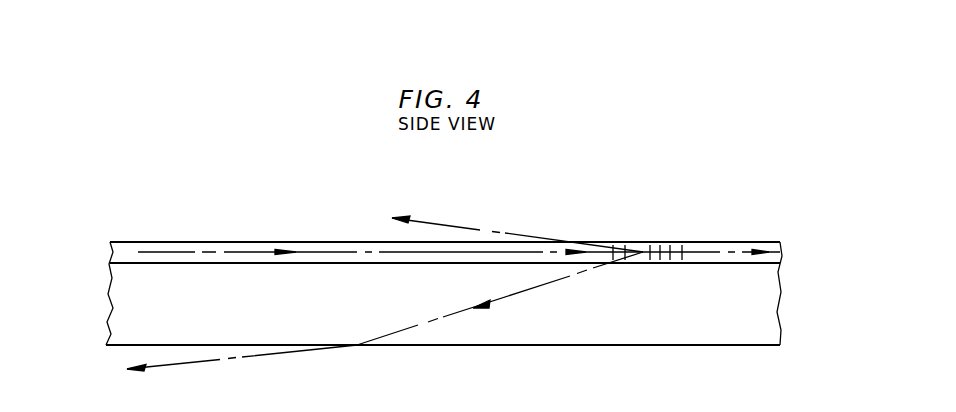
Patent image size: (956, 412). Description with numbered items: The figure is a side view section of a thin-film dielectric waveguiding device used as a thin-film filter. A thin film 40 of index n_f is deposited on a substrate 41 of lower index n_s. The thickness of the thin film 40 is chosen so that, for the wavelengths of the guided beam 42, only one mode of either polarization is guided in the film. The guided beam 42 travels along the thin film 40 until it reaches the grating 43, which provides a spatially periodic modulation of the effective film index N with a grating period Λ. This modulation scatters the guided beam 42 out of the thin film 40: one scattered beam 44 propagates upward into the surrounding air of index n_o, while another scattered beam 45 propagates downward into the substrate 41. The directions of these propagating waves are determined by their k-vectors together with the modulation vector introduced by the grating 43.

The thin film 40 is at (118, 250).
The substrate 41 is at (120, 312).
The beam 42 is at (232, 250).
The grating 43 is at (668, 248).
The scattered beam 44 is at (478, 227).
The scattered beam 45 is at (558, 282).